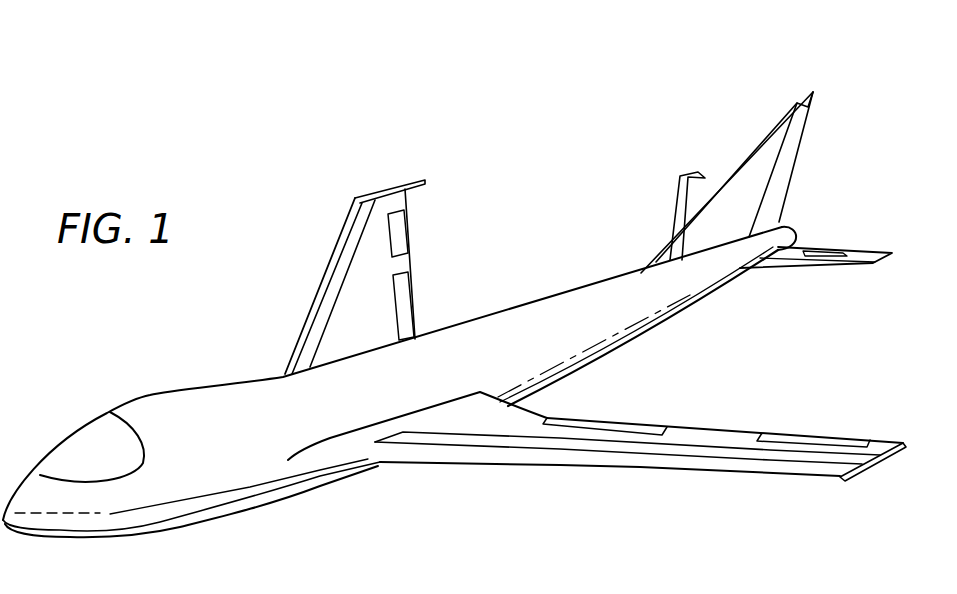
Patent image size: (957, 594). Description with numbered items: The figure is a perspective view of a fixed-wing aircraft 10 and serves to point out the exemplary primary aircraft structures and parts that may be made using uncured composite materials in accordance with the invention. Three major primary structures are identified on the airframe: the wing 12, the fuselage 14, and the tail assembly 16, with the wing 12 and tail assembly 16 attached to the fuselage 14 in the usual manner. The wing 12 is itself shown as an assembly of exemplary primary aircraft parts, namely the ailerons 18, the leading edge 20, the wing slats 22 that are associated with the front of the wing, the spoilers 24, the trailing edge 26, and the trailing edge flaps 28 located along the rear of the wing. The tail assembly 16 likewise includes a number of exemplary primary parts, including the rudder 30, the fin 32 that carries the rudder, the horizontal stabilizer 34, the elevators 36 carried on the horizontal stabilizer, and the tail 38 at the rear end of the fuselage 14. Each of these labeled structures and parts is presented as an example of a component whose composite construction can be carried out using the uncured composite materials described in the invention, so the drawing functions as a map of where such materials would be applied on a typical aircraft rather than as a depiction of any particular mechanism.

The fixed-wing aircraft 10 is at (454, 498).
The wing 12 is at (693, 440).
The fuselage 14 is at (587, 302).
The tail assembly 16 is at (718, 30).
The ailerons 18 is at (792, 438).
The leading edge 20 is at (317, 298).
The wing slats 22 is at (353, 245).
The spoilers 24 is at (392, 188).
The trailing edge 26 is at (408, 262).
The trailing edge flaps 28 is at (405, 302).
The rudder 30 is at (793, 138).
The fin 32 is at (738, 182).
The horizontal stabilizer 34 is at (790, 262).
The elevators 36 is at (843, 253).
The tail 38 is at (783, 232).